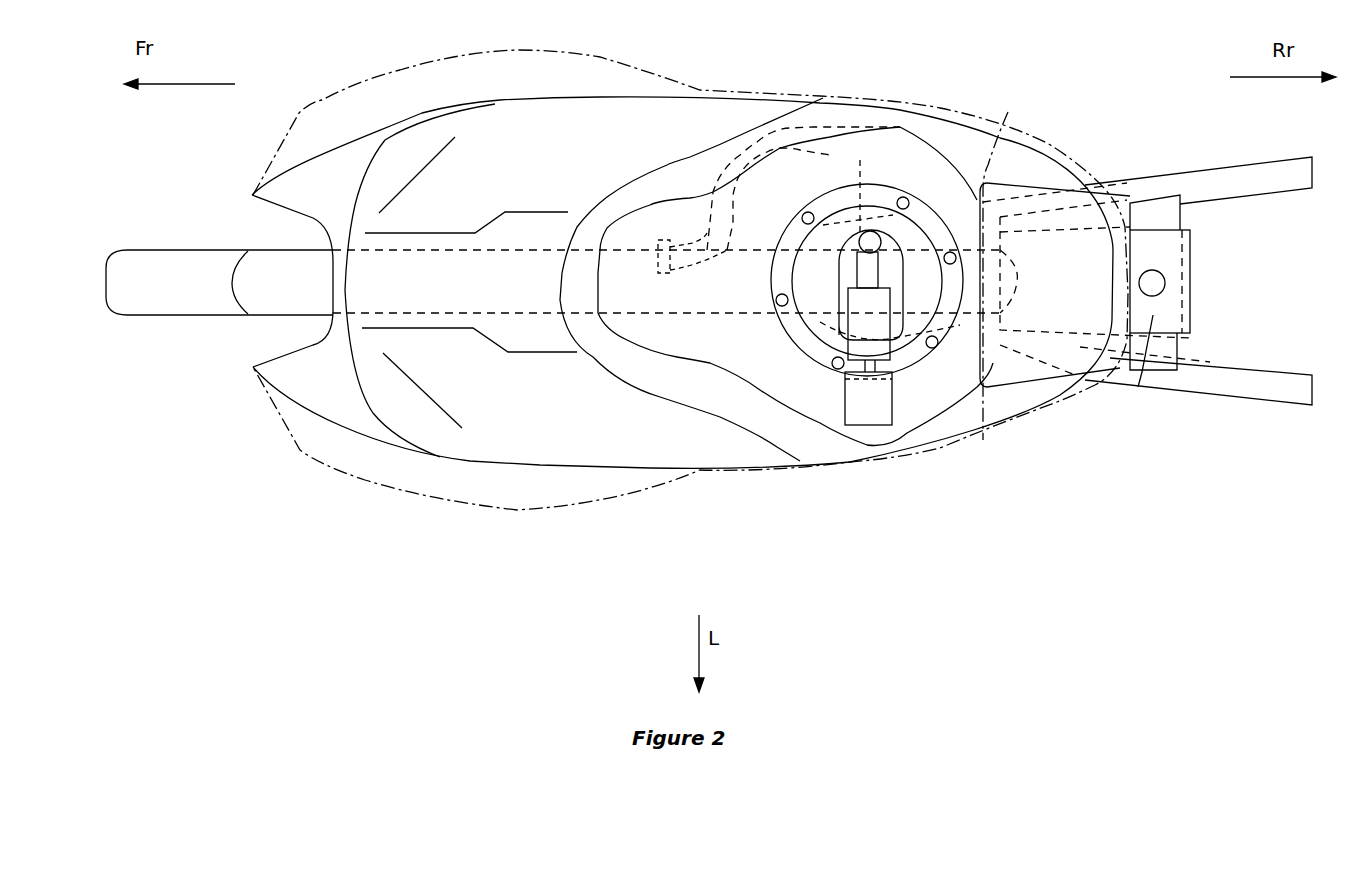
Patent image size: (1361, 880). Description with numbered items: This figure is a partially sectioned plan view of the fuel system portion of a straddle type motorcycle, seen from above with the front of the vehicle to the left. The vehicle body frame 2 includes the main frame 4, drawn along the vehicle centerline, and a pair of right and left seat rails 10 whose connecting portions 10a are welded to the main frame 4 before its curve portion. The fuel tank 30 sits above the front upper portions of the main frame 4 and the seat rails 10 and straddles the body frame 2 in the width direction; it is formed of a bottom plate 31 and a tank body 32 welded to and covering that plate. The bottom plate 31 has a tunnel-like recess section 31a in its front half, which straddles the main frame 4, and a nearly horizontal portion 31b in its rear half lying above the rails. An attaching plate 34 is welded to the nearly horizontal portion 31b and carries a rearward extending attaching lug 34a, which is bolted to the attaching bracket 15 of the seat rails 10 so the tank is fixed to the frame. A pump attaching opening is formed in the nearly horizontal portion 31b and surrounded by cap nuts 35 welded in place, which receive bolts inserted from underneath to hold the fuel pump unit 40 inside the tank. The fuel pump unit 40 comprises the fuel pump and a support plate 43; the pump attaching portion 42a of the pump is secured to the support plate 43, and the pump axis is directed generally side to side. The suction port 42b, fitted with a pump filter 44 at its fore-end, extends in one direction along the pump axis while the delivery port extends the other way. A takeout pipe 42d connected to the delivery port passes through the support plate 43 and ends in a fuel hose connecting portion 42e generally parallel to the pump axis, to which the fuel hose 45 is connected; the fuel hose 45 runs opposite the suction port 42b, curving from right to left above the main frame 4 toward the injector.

The vehicle body frame 2 is at (165, 360).
The main frame 4 is at (513, 265).
The seat rails 10 is at (1250, 173).
The connecting portions 10a is at (997, 465).
The attaching bracket 15 is at (1152, 198).
The fuel tank 30 is at (950, 112).
The bottom plate 31 is at (655, 478).
The recess section 31a is at (538, 340).
The nearly horizontal portion 31b is at (827, 170).
The tank body 32 is at (812, 480).
The attaching plate 34 is at (1205, 303).
The attaching lug 34a is at (1140, 385).
The cap nuts 35 is at (903, 200).
The fuel pump unit 40 is at (904, 400).
The pump attaching portion 42a is at (802, 357).
The suction port 42b is at (838, 372).
The takeout pipe 42d is at (872, 236).
The fuel hose connecting portion 42e is at (857, 270).
The support plate 43 is at (890, 275).
The pump filter 44 is at (868, 415).
The fuel hose 45 is at (768, 147).